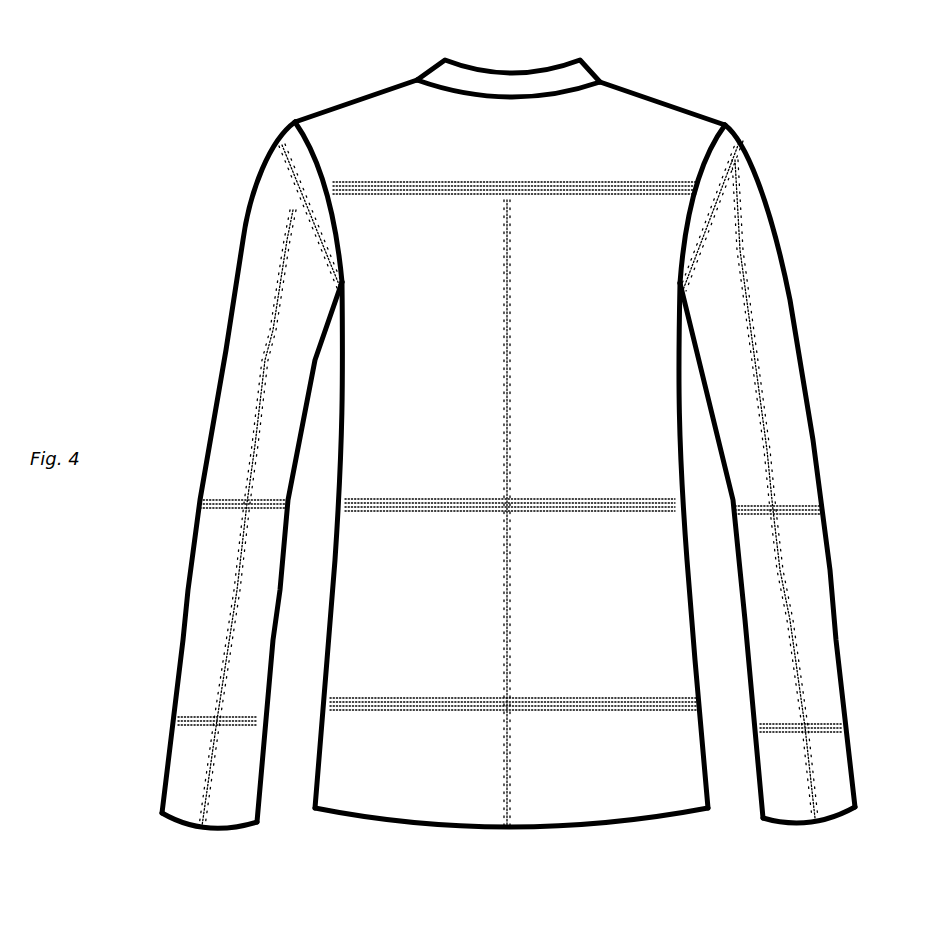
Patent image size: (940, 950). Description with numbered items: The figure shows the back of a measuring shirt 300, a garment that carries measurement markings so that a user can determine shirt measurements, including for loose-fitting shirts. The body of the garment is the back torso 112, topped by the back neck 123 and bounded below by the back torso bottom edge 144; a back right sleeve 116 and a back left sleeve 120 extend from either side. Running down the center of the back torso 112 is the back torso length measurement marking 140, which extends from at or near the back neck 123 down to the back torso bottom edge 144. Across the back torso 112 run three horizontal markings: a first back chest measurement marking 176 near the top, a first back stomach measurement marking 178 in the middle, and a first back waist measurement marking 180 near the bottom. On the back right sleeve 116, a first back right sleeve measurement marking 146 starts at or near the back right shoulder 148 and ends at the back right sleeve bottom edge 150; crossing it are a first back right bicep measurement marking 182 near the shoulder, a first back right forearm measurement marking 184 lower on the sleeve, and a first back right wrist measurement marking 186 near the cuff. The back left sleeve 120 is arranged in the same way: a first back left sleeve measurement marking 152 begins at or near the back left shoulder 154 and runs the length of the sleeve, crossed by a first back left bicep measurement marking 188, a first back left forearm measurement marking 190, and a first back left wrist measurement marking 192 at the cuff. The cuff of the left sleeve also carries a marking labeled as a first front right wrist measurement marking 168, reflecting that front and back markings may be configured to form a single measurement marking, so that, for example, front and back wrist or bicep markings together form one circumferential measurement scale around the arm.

The measuring shirt 300 is at (178, 90).
The back torso 112 is at (510, 444).
The back right sleeve 116 is at (767, 471).
The back left sleeve 120 is at (252, 472).
The back neck 123 is at (453, 70).
The back torso length measurement marking 140 is at (512, 232).
The back torso bottom edge 144 is at (490, 828).
The first back right sleeve measurement marking 146 is at (765, 450).
The back right shoulder 148 is at (703, 175).
The back right sleeve bottom edge 150 is at (825, 822).
The first back left sleeve measurement marking 152 is at (255, 445).
The back left shoulder 154 is at (332, 217).
The first front right wrist measurement marking 168 is at (190, 720).
The first back chest measurement marking 176 is at (617, 182).
The first back stomach measurement marking 178 is at (397, 510).
The first back waist measurement marking 180 is at (378, 707).
The first back right bicep measurement marking 182 is at (737, 173).
The first back right forearm measurement marking 184 is at (800, 508).
The first back right wrist measurement marking 186 is at (818, 723).
The first back left bicep measurement marking 188 is at (288, 168).
The first back left forearm measurement marking 190 is at (218, 505).
The first back left wrist measurement marking 192 is at (185, 827).